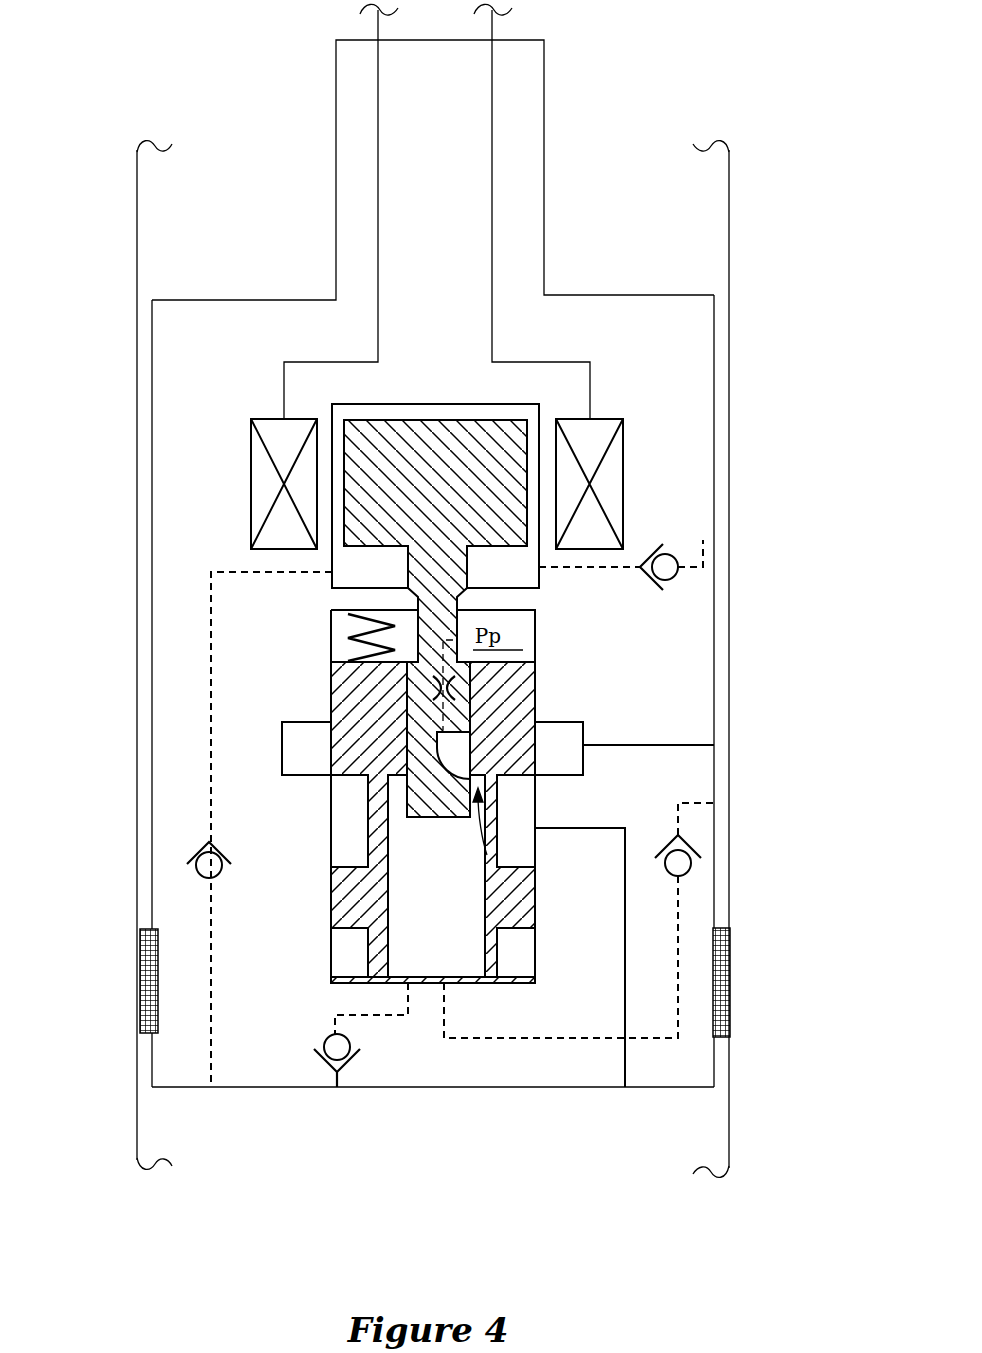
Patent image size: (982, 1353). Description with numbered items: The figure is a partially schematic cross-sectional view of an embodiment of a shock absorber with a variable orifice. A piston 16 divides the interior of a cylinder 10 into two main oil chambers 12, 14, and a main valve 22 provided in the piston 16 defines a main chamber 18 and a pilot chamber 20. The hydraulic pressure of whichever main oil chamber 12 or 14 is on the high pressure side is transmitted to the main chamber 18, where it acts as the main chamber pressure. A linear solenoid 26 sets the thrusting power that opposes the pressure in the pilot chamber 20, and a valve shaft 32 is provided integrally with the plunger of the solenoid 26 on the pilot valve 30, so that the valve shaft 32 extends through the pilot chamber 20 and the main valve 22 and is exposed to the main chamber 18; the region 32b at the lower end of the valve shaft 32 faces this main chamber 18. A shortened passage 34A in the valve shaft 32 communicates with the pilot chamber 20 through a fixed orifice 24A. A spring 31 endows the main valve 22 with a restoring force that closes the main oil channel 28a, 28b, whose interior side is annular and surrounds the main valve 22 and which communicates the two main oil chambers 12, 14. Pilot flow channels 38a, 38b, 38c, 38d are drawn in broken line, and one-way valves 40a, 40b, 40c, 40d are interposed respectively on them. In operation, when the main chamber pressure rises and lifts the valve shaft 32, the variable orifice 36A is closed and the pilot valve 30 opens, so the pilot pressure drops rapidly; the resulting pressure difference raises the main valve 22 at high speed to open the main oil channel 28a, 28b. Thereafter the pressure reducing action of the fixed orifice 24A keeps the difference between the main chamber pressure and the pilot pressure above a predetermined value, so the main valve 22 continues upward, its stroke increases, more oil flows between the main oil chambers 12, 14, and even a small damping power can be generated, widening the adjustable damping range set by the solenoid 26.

The cylinder 10 is at (728, 232).
The main oil chamber 12 is at (225, 216).
The main oil chamber 14 is at (190, 1216).
The piston 16 is at (695, 296).
The main chamber 18 is at (470, 953).
The pilot chamber 20 is at (343, 618).
The main valve 22 is at (493, 983).
The fixed orifice 24A is at (458, 682).
The linear solenoid 26 is at (462, 404).
The main oil channel 28a is at (648, 745).
The main oil channel 28b is at (625, 1057).
The pilot valve 30 is at (393, 580).
The spring 31 is at (352, 638).
The valve shaft 32 is at (405, 750).
The plunger bore 32b is at (432, 818).
The passage 34A is at (455, 742).
The variable orifice 36A is at (487, 855).
The pilot flow channel 38a is at (387, 1015).
The pilot flow channel 38b is at (703, 540).
The pilot flow channel 38c is at (680, 900).
The pilot flow channel 38d is at (205, 899).
The one-way valve 40a is at (337, 1060).
The one-way valve 40b is at (668, 563).
The one-way valve 40c is at (680, 862).
The one-way valve 40d is at (203, 853).